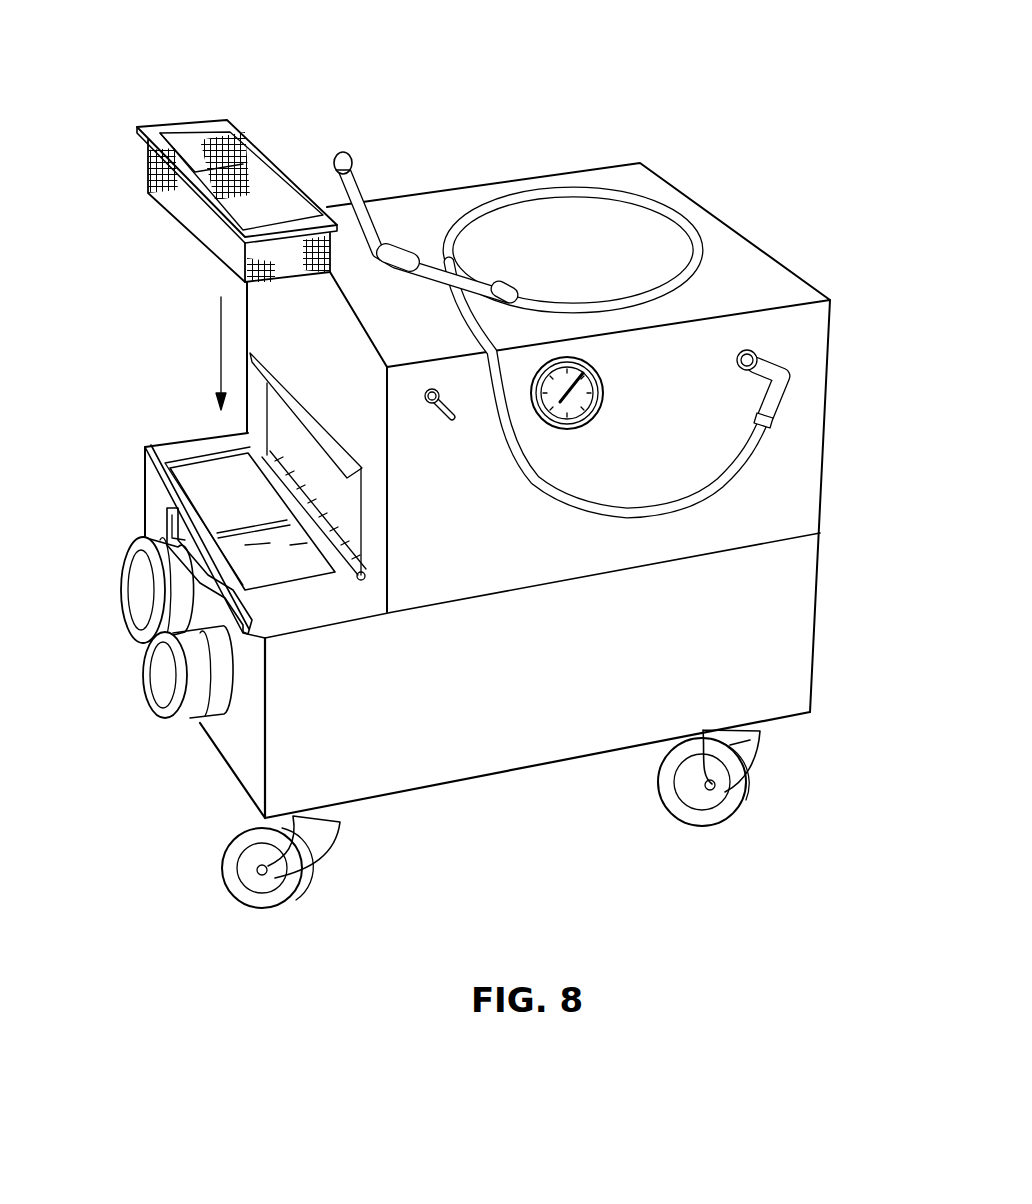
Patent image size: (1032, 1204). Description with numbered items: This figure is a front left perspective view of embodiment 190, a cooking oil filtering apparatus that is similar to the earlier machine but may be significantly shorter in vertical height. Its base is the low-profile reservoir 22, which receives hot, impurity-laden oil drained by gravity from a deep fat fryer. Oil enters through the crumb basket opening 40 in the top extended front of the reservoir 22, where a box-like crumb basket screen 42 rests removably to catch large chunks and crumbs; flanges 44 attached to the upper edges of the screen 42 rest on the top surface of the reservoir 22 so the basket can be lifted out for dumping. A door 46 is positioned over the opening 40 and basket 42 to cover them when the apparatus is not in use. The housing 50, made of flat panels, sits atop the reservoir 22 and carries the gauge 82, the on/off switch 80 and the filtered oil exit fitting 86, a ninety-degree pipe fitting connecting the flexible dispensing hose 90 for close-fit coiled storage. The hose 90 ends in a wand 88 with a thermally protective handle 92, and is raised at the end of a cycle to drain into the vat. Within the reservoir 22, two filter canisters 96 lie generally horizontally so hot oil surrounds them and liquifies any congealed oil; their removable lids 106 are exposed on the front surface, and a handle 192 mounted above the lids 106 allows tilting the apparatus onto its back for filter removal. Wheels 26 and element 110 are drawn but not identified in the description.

The reservoir 22 is at (562, 692).
The caster wheels 26 is at (228, 863).
The crumb basket opening 40 is at (207, 475).
The crumb basket screen 42 is at (153, 197).
The flanges 44 is at (198, 125).
The door 46 is at (288, 388).
The housing 50 is at (775, 272).
The on/off switch 80 is at (452, 422).
The gauge 82 is at (590, 420).
The filtered oil exit fitting 86 is at (783, 392).
The wand 88 is at (343, 153).
The flexible dispensing hose 90 is at (658, 207).
The handle 92 is at (410, 255).
The filter canister 96 is at (282, 555).
The filter canister lids 106 is at (133, 598).
The lower nozzle 110 is at (227, 688).
The embodiment 190 is at (515, 138).
The handle 192 is at (160, 537).